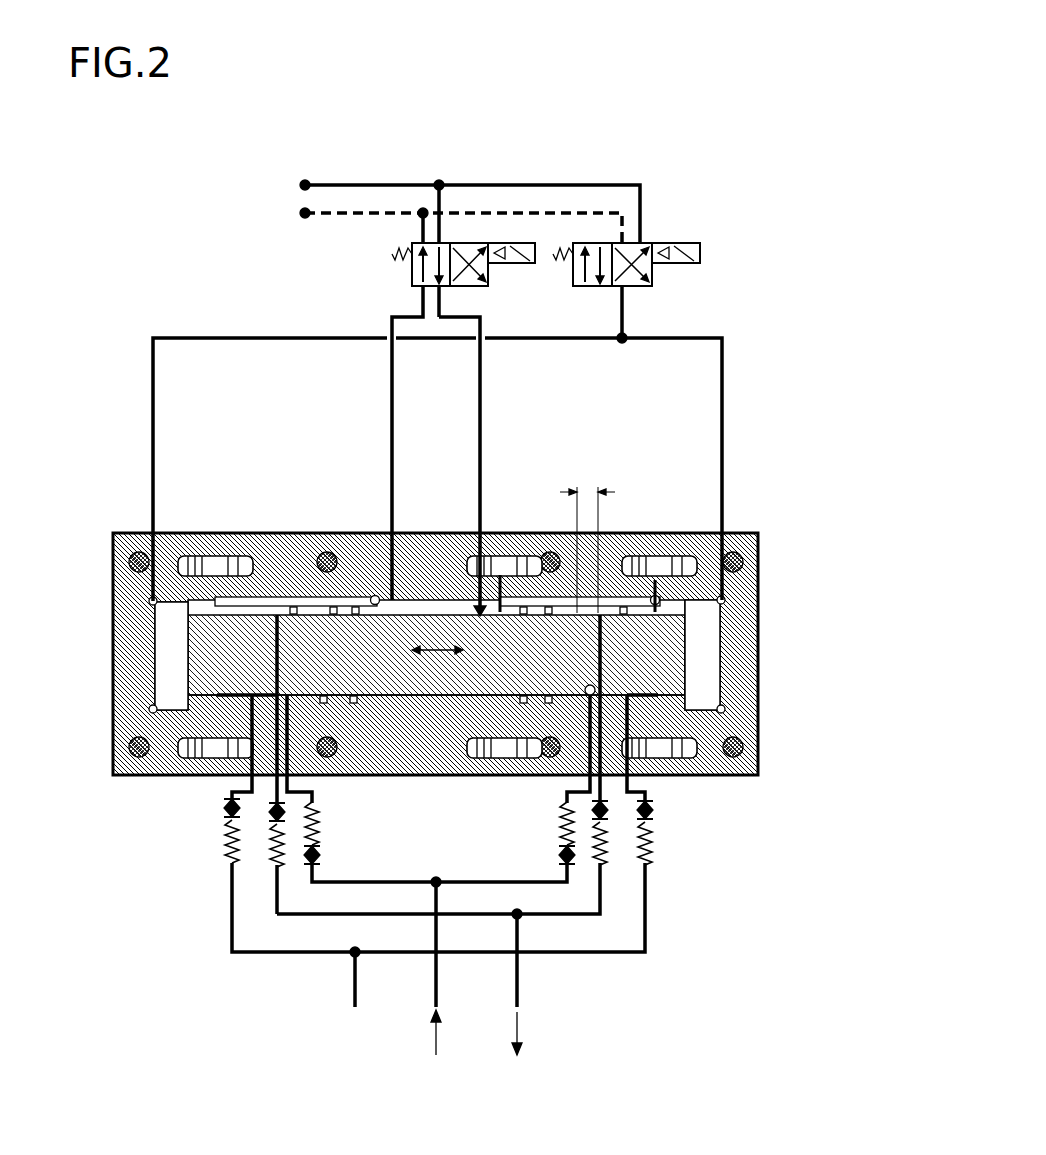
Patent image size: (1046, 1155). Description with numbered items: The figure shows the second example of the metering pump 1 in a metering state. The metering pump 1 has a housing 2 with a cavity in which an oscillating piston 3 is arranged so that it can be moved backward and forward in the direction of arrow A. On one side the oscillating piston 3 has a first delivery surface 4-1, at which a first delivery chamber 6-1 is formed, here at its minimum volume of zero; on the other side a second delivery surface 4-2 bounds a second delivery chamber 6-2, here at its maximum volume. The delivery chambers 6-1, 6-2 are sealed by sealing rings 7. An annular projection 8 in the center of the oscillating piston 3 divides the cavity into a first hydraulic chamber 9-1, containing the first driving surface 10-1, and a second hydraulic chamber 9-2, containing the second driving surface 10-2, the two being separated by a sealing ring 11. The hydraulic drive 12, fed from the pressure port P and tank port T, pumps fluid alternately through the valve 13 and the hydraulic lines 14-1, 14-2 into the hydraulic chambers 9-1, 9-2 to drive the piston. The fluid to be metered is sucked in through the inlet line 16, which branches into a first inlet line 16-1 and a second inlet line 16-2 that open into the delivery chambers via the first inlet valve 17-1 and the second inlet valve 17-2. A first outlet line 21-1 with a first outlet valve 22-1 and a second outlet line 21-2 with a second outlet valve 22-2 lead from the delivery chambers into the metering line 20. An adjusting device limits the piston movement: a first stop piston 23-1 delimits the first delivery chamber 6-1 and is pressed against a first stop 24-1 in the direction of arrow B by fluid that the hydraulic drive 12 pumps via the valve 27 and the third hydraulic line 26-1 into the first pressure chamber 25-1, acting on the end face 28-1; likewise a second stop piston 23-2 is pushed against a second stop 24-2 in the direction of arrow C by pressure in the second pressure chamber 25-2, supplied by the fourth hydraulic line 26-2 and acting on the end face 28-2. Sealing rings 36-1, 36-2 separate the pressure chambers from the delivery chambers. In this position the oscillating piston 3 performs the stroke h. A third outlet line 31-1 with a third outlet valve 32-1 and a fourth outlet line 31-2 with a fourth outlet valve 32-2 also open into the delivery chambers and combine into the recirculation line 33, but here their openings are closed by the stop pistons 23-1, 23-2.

The metering pump 1 is at (138, 312).
The housing 2 is at (284, 545).
The oscillating piston 3 is at (368, 777).
The first delivery surface 4-1 is at (165, 622).
The second delivery surface 4-2 is at (710, 700).
The first delivery chamber 6-1 is at (178, 712).
The second delivery chamber 6-2 is at (690, 648).
The sealing rings 7 is at (345, 777).
The annular projection 8 is at (405, 592).
The first hydraulic chamber 9-1 is at (395, 777).
The second hydraulic chamber 9-2 is at (450, 777).
The first driving surface 10-1 is at (370, 592).
The second driving surface 10-2 is at (505, 580).
The sealing ring 11 is at (440, 540).
The hydraulic drive 12 is at (471, 166).
The valve 13 is at (403, 265).
The hydraulic line 14-1 is at (390, 388).
The hydraulic line 14-2 is at (484, 372).
The inlet line 16 is at (434, 990).
The first inlet line 16-1 is at (388, 884).
The second inlet line 16-2 is at (470, 884).
The first inlet valve 17-1 is at (335, 862).
The second inlet valve 17-2 is at (548, 860).
The metering line 20 is at (520, 985).
The first outlet line 21-1 is at (295, 918).
The second outlet line 21-2 is at (606, 905).
The first outlet valve 22-1 is at (263, 873).
The second outlet valve 22-2 is at (625, 872).
The first stop piston 23-1 is at (245, 660).
The second stop piston 23-2 is at (700, 612).
The first stop 24-1 is at (180, 548).
The second stop 24-2 is at (727, 532).
The first pressure chamber 25-1 is at (112, 590).
The second pressure chamber 25-2 is at (760, 710).
The third hydraulic line 26-1 is at (150, 368).
The fourth hydraulic line 26-2 is at (724, 370).
The valve 27 is at (668, 270).
The end face 28-1 is at (183, 668).
The end face 28-2 is at (628, 650).
The third outlet line 31-1 is at (232, 840).
The fourth outlet line 31-2 is at (610, 950).
The third outlet valve 32-1 is at (222, 806).
The fourth outlet valve 32-2 is at (665, 847).
The recirculation line 33 is at (355, 990).
The sealing ring 36-1 is at (232, 556).
The sealing ring 36-2 is at (650, 556).
The stroke h is at (587, 486).
The arrow A is at (488, 777).
The arrow B is at (170, 703).
The arrow C is at (660, 668).
The pressure port P is at (455, 208).
The tank port T is at (446, 222).